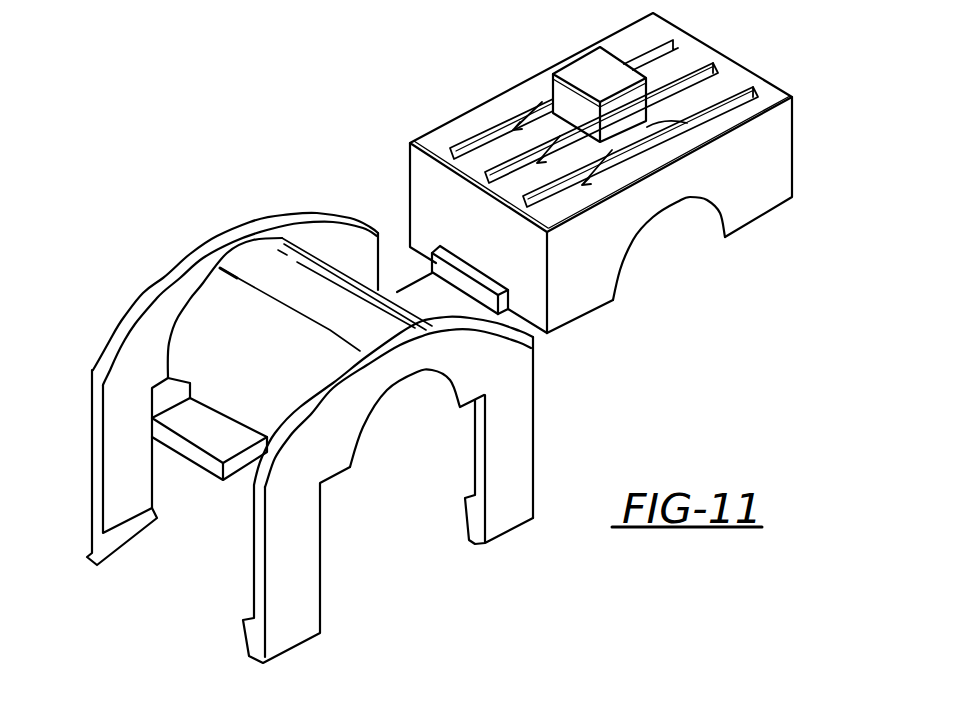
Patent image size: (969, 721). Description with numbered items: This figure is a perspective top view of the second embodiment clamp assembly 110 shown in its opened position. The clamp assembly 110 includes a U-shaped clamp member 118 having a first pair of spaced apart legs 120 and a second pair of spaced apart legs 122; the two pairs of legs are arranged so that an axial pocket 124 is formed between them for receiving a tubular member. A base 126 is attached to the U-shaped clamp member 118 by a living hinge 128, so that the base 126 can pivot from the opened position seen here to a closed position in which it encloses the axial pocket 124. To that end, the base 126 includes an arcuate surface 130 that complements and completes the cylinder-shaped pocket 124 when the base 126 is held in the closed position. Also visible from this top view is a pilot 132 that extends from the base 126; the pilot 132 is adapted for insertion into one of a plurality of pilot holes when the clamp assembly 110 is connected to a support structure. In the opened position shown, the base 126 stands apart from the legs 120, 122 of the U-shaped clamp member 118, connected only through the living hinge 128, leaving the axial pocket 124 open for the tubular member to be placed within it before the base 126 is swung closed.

The second embodiment clamp assembly 110 is at (142, 234).
The U-shaped clamp member 118 is at (74, 369).
The first pair of spaced apart legs 120 is at (115, 473).
The second pair of spaced apart legs 122 is at (503, 513).
The axial pocket 124 is at (453, 393).
The base 126 is at (760, 55).
The living hinge 128 is at (413, 297).
The arcuate surface 130 is at (702, 213).
The pilot 132 is at (580, 70).